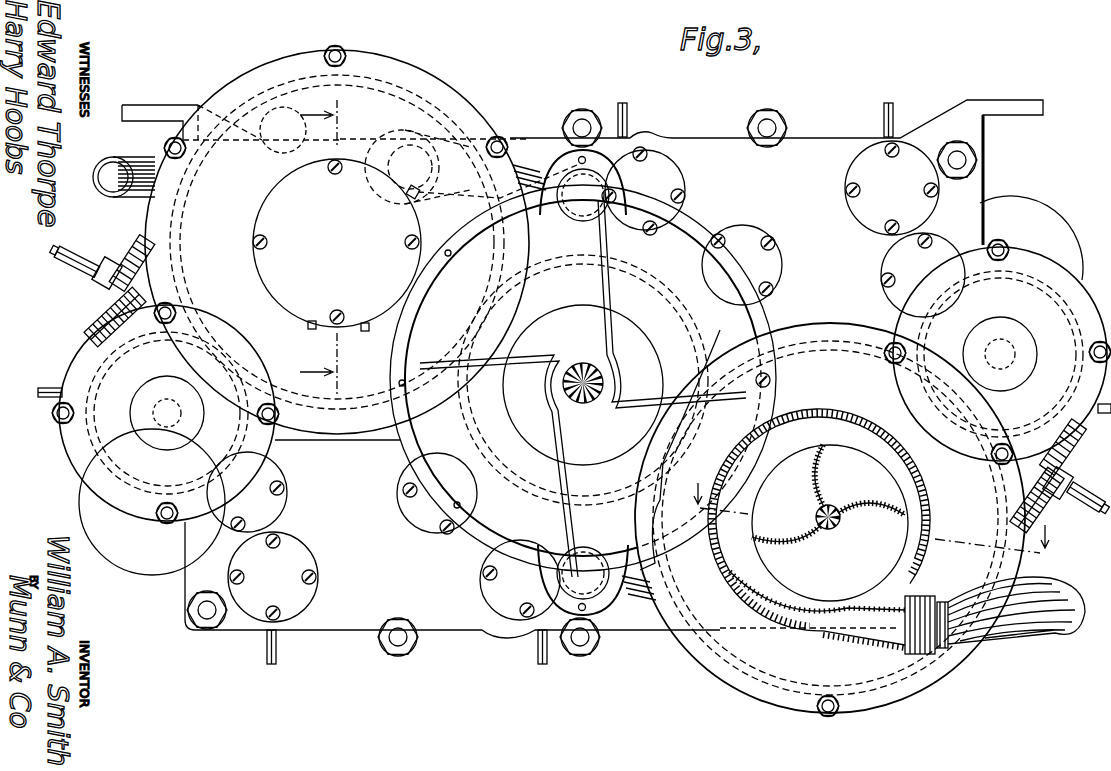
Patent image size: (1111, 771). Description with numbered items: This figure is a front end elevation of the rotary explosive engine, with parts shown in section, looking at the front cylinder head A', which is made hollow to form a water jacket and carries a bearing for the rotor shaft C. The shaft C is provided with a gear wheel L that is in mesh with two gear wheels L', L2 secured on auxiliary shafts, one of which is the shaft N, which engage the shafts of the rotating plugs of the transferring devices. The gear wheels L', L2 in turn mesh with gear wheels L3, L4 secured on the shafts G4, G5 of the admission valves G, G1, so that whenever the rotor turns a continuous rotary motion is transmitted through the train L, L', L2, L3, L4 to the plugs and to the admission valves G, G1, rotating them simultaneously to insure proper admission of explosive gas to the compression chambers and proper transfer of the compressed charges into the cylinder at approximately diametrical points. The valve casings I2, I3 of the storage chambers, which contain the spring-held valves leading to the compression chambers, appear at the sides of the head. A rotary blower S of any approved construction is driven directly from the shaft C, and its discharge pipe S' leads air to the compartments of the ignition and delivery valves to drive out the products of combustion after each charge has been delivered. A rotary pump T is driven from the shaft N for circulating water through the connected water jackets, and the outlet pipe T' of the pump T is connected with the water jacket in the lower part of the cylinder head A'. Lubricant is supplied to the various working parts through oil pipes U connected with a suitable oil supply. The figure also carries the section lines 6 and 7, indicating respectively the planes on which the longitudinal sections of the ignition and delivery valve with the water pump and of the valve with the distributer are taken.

The cylinder head A' is at (581, 378).
The oil pipes U is at (628, 110).
The gear wheel L2 is at (500, 255).
The section line 7— 7 is at (322, 242).
The gear wheel L is at (583, 382).
The discharge pipe S' is at (584, 389).
The rotary blower S is at (583, 388).
The rotor shaft C is at (563, 385).
The gear wheel L' is at (830, 520).
The rotary pump T is at (832, 528).
The auxiliary shaft N is at (831, 506).
The outlet pipe T' is at (995, 623).
The section line 6— 6 is at (866, 526).
The admission valve G is at (997, 352).
The gear wheel L3 is at (1075, 338).
The admission valve shaft G4 is at (994, 364).
The admission valve G1 is at (163, 414).
The gear wheel L4 is at (212, 478).
The admission valve shaft G5 is at (163, 425).
The valve casing I3 is at (130, 262).
The valve casing I2 is at (1066, 452).